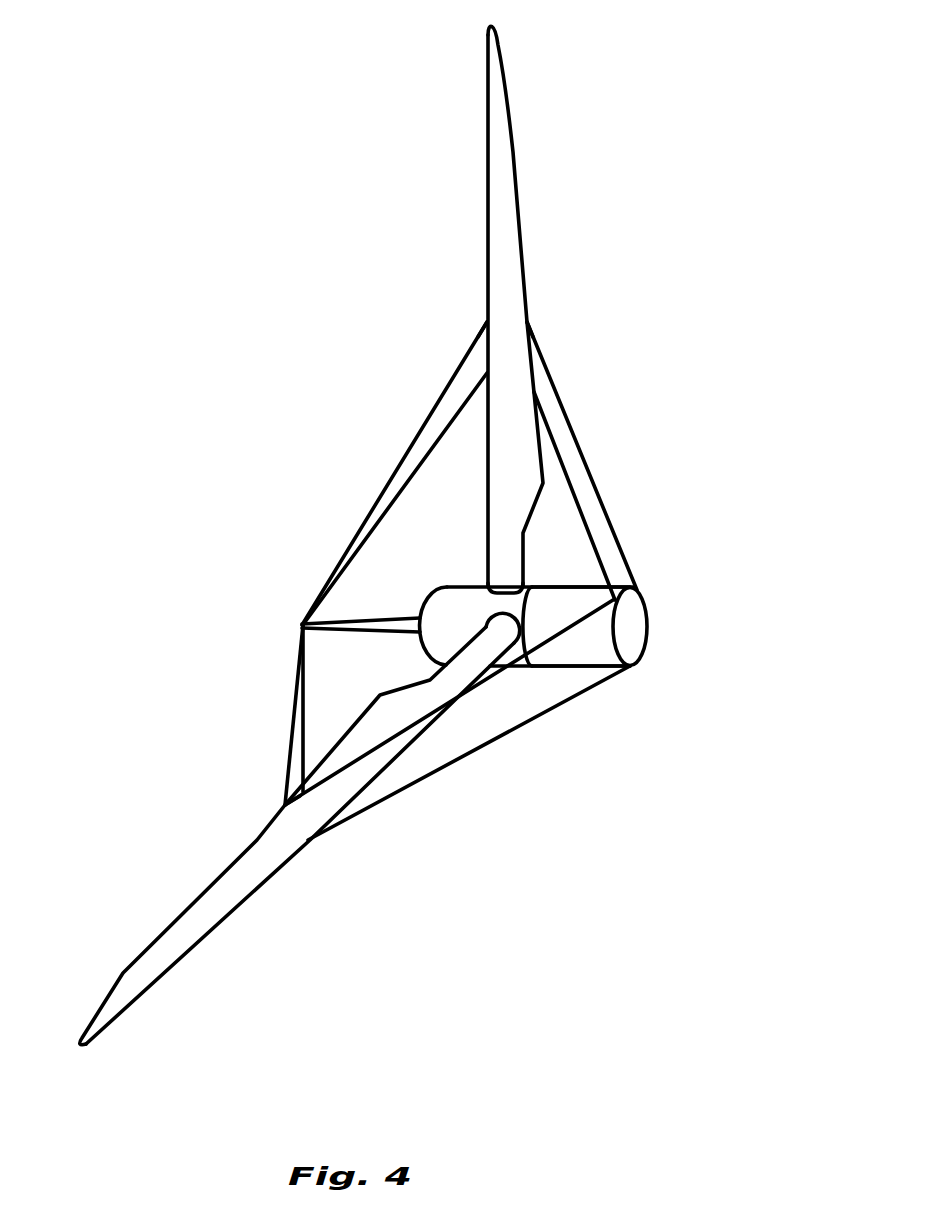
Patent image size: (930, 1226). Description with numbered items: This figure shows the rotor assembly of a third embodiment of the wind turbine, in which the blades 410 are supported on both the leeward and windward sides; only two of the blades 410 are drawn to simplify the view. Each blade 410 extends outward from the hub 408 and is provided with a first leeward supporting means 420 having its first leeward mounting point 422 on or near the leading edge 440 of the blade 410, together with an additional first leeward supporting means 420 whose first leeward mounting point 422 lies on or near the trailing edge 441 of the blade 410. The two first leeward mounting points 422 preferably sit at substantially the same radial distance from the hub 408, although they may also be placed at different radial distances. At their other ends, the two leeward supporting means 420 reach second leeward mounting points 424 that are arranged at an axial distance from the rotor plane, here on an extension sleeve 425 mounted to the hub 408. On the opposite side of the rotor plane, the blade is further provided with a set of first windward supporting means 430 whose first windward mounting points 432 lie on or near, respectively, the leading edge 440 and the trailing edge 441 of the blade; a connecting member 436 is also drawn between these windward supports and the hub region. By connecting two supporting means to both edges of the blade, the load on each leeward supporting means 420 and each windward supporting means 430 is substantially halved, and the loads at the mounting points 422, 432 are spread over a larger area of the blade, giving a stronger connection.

The hub 408 is at (630, 577).
The blade 410 is at (330, 535).
The first leeward supporting means 420 is at (560, 472).
The first leeward mounting point 422 is at (487, 322).
The second leeward mounting point 424 is at (643, 602).
The extension sleeve 425 is at (625, 622).
The first windward supporting means 430 is at (372, 516).
The first windward mounting point 432 is at (527, 322).
The strut 436 is at (358, 625).
The leading edge 440 is at (487, 152).
The trailing edge 441 is at (513, 152).